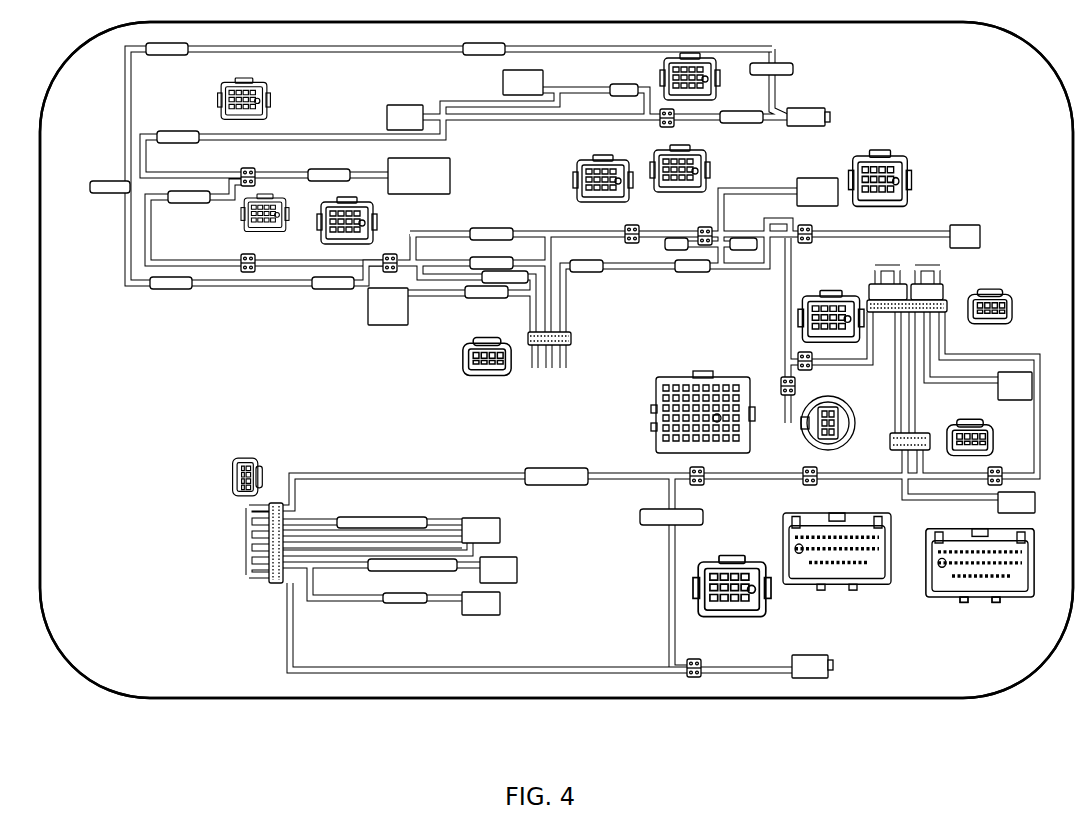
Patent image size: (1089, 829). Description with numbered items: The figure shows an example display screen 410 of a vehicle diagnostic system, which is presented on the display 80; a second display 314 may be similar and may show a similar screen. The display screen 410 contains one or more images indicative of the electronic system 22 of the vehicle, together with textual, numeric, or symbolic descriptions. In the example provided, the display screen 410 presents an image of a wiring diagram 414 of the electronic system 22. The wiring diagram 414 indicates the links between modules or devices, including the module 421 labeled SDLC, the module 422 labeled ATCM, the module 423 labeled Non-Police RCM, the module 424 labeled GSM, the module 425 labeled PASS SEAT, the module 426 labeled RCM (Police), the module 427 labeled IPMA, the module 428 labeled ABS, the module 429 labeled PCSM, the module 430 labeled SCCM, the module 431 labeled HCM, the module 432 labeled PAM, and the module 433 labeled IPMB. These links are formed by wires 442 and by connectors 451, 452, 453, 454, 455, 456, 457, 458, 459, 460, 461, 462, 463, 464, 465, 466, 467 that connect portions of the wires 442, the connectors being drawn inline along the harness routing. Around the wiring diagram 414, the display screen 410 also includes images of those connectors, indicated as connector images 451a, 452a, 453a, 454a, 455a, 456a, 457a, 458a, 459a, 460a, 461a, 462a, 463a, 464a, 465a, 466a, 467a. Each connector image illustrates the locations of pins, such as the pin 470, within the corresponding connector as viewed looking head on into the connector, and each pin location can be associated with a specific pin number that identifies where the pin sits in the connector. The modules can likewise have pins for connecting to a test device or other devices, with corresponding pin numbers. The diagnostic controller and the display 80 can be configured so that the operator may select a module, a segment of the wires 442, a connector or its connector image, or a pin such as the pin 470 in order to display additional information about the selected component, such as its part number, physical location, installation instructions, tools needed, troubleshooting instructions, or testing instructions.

The electronic system 22 is at (234, 597).
The display 80 is at (103, 690).
The second display 314 is at (556, 360).
The display screen 410 is at (148, 545).
The wiring diagram 414 is at (113, 107).
The module 421 is at (807, 108).
The module 422 is at (503, 82).
The module 423 is at (450, 172).
The module 424 is at (388, 110).
The module 425 is at (382, 326).
The module 426 is at (803, 178).
The module 427 is at (970, 225).
The module 428 is at (1008, 372).
The module 429 is at (995, 505).
The module 430 is at (810, 680).
The module 431 is at (500, 526).
The module 432 is at (517, 572).
The module 433 is at (500, 605).
The wires 442 is at (312, 700).
The connector 451 is at (675, 125).
The connector image 451a is at (697, 55).
The connector 452 is at (256, 172).
The connector image 452a is at (216, 100).
The connector 453 is at (248, 272).
The connector image 453a is at (245, 222).
The connector 454 is at (393, 255).
The connector image 454a is at (320, 232).
The connector 455 is at (642, 232).
The connector image 455a is at (577, 185).
The connector 456 is at (708, 246).
The connector image 456a is at (660, 150).
The connector 457 is at (815, 240).
The connector image 457a is at (885, 152).
The connector 458 is at (572, 338).
The connector image 458a is at (489, 376).
The connector 459 is at (947, 308).
The connector image 459a is at (995, 285).
The connector 460 is at (798, 363).
The connector image 460a is at (803, 320).
The connector 461 is at (788, 396).
The connector image 461a is at (842, 448).
The connector 462 is at (998, 468).
The connector image 462a is at (968, 602).
The connector 463 is at (896, 433).
The connector image 463a is at (963, 420).
The connector 464 is at (818, 483).
The connector image 464a is at (855, 588).
The connector 465 is at (703, 484).
The connector image 465a is at (656, 392).
The connector 466 is at (278, 500).
The connector image 466a is at (245, 458).
The connector 467 is at (698, 678).
The connector image 467a is at (766, 600).
The pin 470 is at (945, 585).